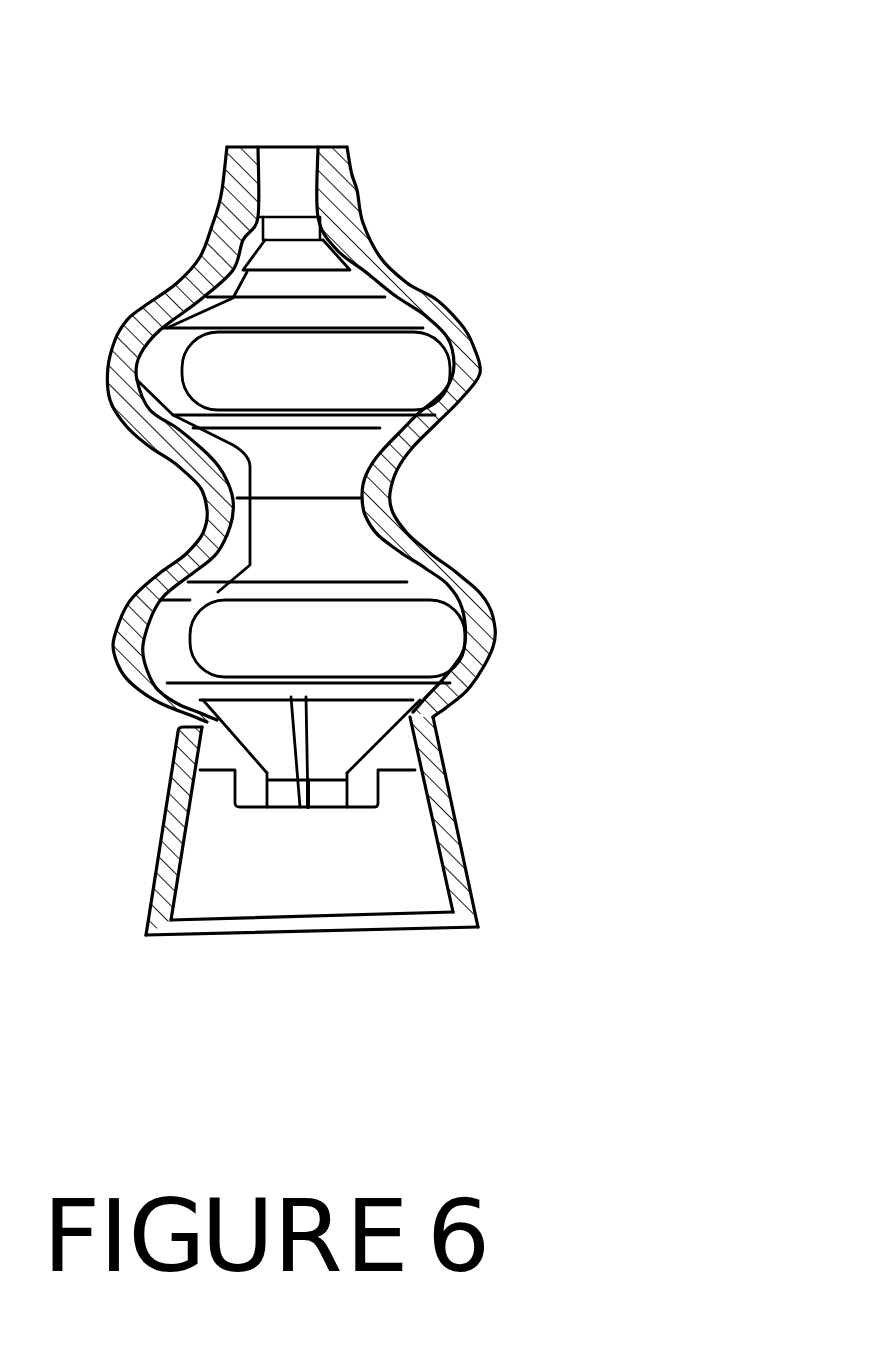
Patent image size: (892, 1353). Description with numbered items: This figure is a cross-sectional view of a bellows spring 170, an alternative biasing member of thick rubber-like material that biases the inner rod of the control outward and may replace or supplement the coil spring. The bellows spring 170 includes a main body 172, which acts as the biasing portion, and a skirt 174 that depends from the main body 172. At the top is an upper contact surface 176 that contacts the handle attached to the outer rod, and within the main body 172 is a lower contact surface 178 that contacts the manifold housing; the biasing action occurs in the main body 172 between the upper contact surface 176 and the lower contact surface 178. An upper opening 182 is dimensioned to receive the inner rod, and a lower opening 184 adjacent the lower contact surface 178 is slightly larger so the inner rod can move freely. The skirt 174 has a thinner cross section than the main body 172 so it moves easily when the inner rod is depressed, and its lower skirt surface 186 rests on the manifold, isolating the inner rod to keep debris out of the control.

The bellows spring 170 is at (402, 538).
The main body 172 is at (392, 500).
The skirt 174 is at (449, 830).
The upper contact surface 176 is at (334, 142).
The lower contact surface 178 is at (363, 812).
The upper opening 182 is at (273, 177).
The lower opening 184 is at (286, 808).
The lower skirt surface 186 is at (157, 940).